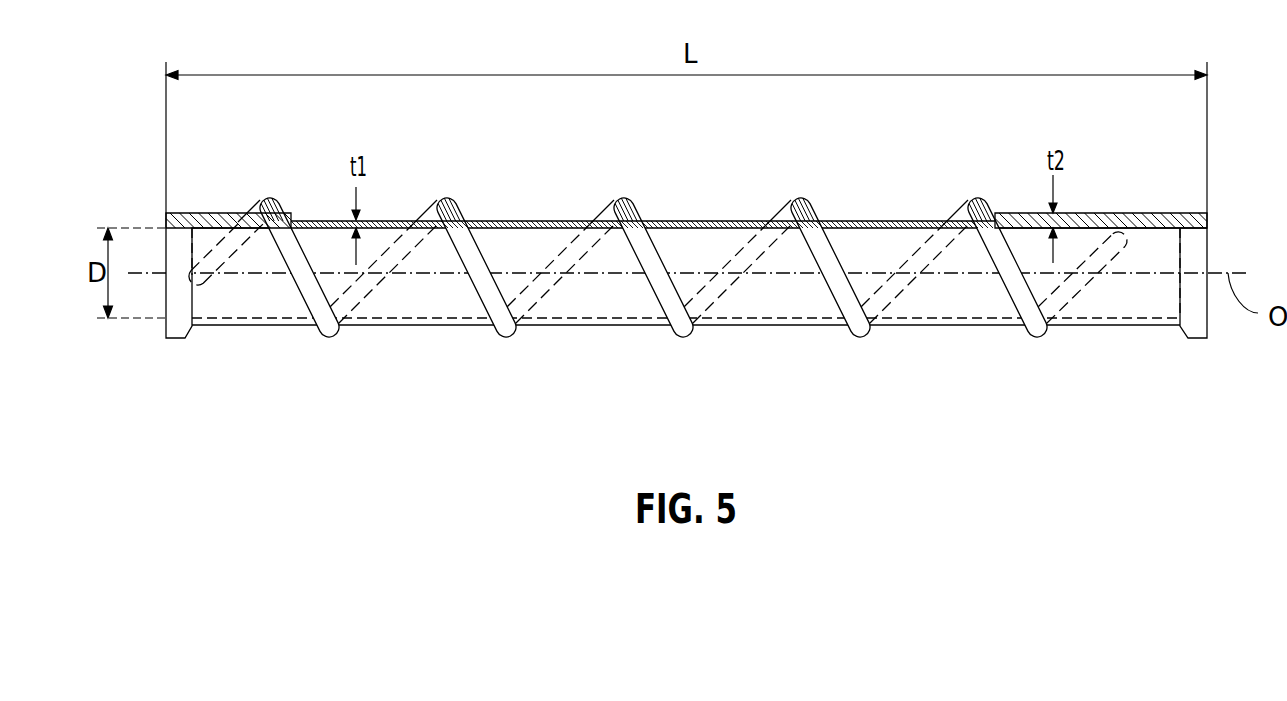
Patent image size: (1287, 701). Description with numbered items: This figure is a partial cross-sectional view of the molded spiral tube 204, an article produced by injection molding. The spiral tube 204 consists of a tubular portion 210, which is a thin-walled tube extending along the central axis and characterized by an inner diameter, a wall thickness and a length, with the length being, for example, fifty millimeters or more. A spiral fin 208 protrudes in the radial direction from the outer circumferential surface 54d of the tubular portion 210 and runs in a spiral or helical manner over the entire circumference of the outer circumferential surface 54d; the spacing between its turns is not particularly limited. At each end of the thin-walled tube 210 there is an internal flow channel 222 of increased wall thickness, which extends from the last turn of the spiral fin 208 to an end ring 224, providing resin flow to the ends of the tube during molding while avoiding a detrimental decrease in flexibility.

The molded spiral tube 204 is at (671, 268).
The internal flow channel 222 is at (213, 213).
The outer circumferential surface 54d is at (510, 221).
The end ring 224 is at (173, 338).
The spiral fin 208 is at (332, 330).
The tubular portion 210 is at (263, 297).